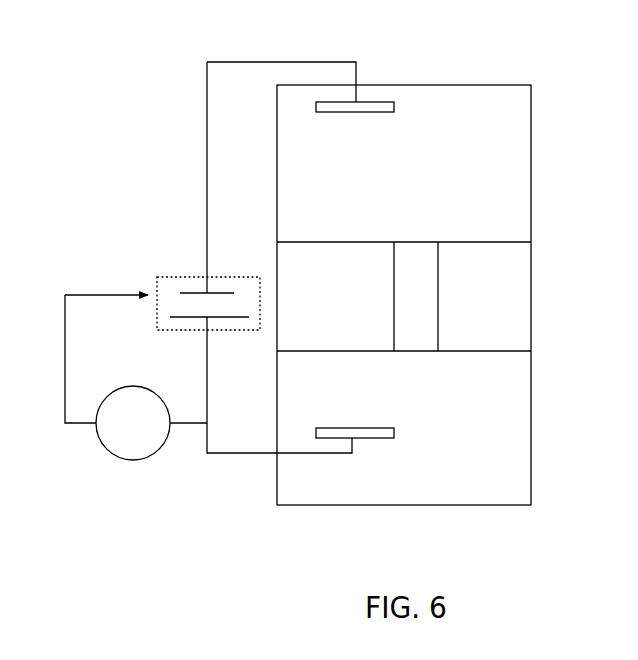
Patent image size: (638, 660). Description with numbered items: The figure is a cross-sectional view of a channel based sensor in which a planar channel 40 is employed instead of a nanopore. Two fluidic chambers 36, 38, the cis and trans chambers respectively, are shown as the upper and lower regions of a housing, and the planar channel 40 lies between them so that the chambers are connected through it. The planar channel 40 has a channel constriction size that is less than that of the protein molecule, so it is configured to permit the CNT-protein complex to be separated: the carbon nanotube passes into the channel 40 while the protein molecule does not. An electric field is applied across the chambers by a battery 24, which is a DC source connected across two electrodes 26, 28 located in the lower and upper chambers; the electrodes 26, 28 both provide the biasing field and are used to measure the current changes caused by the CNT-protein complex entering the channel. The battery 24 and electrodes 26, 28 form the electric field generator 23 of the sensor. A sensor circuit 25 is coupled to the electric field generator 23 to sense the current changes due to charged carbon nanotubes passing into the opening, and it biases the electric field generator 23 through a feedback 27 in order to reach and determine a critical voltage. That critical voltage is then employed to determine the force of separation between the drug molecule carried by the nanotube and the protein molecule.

The electric field generator 23 is at (196, 173).
The battery 24 is at (205, 281).
The sensor circuit 25 is at (131, 460).
The electrode 26 is at (387, 438).
The feedback 27 is at (65, 295).
The electrode 28 is at (364, 102).
The fluidic chamber 36 is at (515, 182).
The fluidic chamber 38 is at (516, 415).
The planar channel 40 is at (417, 253).